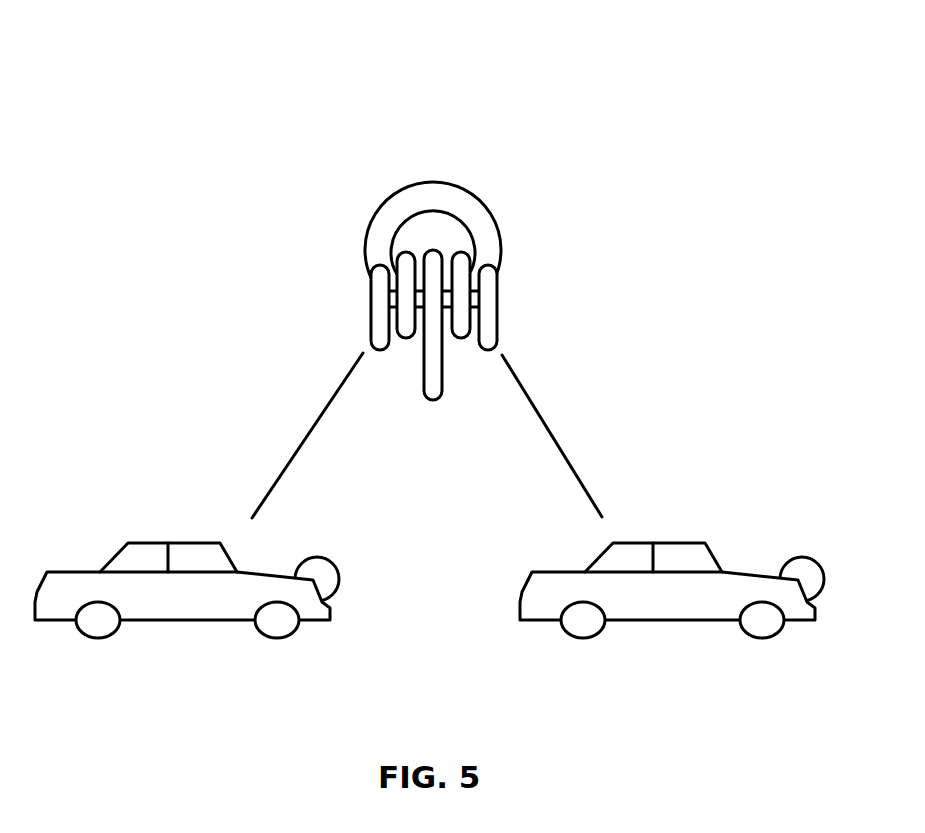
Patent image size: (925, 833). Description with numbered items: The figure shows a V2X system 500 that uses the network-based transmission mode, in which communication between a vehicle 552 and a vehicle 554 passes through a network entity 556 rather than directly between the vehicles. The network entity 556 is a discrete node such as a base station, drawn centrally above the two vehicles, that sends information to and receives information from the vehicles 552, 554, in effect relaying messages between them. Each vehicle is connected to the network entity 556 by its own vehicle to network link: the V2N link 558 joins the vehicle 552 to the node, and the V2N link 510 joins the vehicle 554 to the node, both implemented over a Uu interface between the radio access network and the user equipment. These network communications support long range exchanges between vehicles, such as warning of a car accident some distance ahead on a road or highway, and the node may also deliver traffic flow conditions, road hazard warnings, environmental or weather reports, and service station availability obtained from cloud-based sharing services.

The V2X system 500 is at (239, 133).
The network entity 556 is at (498, 310).
The vehicle to network (V2N) link 558 is at (285, 470).
The vehicle to network (V2N) link 510 is at (545, 424).
The vehicle 552 is at (213, 622).
The vehicle 554 is at (692, 622).